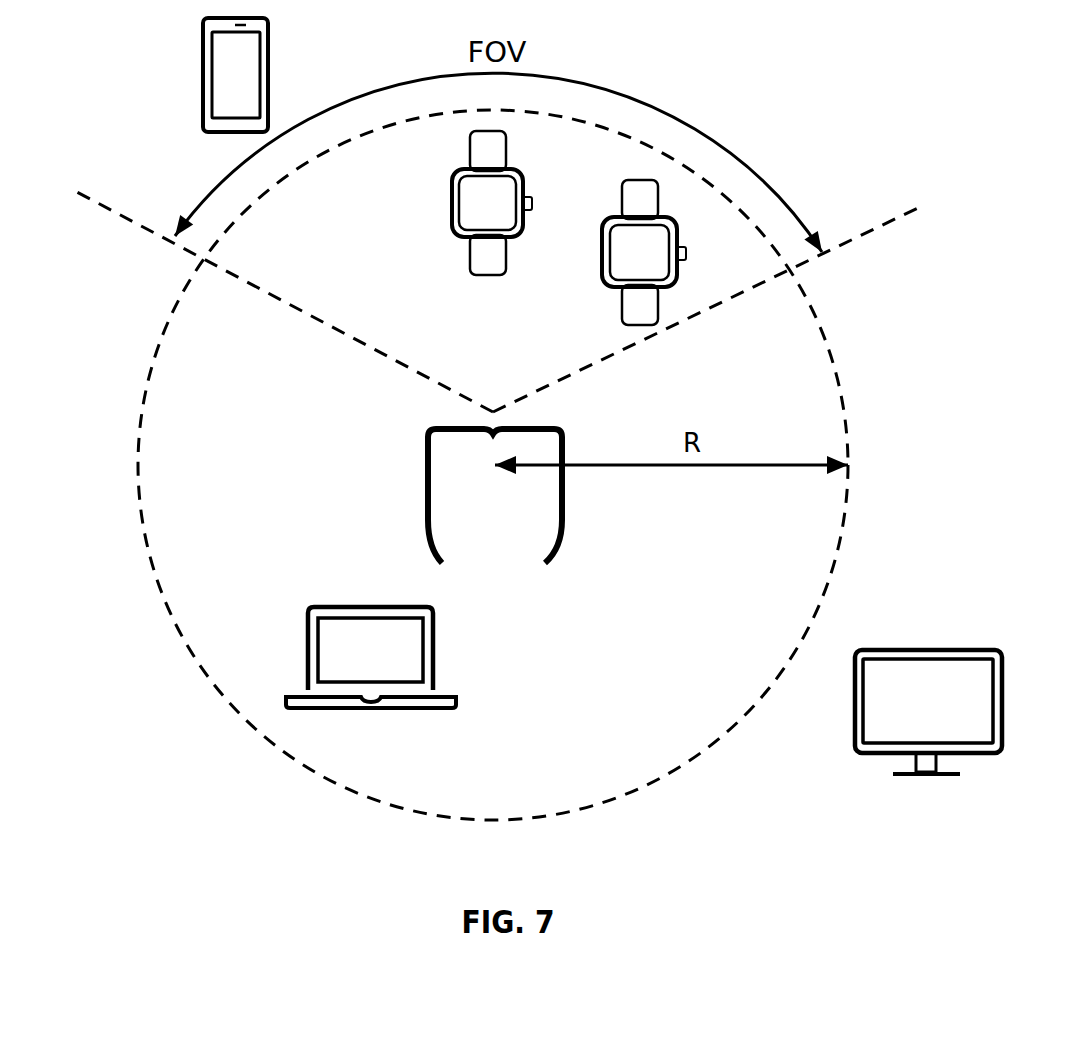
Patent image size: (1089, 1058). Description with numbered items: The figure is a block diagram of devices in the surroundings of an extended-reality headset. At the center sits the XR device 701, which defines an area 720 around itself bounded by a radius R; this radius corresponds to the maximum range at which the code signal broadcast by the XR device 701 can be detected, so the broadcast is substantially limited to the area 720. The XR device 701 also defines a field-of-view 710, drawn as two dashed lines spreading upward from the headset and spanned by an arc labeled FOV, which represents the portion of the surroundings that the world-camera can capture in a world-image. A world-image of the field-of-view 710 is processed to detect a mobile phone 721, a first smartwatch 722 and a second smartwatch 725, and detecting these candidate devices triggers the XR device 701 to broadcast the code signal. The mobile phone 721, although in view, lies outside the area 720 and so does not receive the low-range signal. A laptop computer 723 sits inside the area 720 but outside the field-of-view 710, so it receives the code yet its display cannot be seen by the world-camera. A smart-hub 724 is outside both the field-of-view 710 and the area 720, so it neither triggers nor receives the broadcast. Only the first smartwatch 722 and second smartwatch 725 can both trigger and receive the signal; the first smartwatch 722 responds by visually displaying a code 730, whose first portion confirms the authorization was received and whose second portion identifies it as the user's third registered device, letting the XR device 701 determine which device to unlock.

The XR device 701 is at (418, 490).
The field-of-view 710 is at (137, 214).
The area 720 is at (845, 360).
The mobile phone 721 is at (201, 70).
The first smartwatch 722 is at (648, 270).
The laptop computer 723 is at (306, 633).
The smart-hub 724 is at (853, 710).
The second smartwatch 725 is at (450, 200).
The code 730 is at (652, 272).